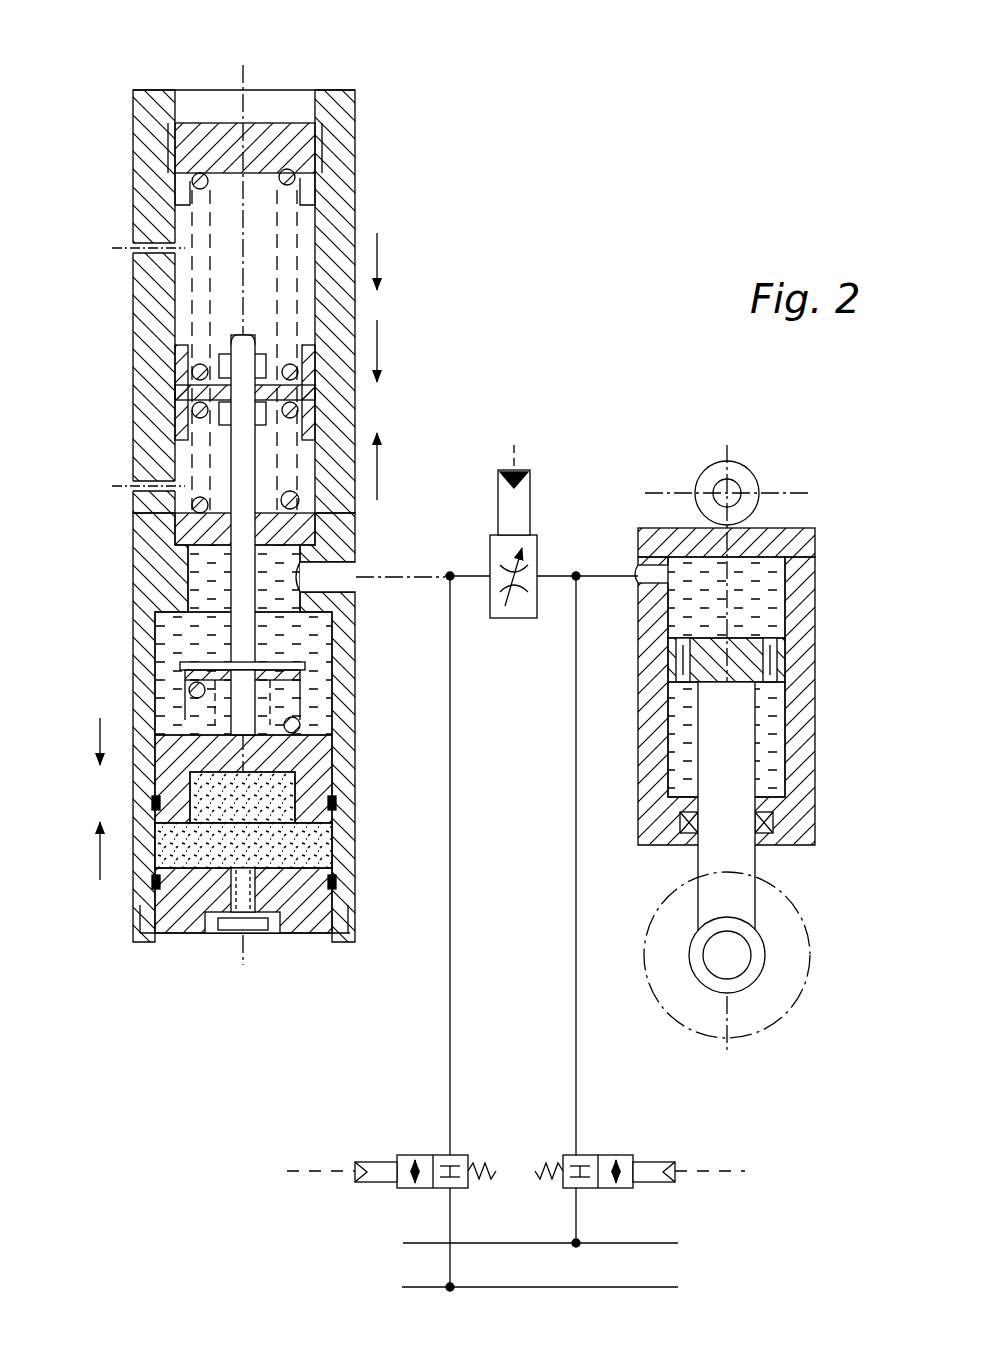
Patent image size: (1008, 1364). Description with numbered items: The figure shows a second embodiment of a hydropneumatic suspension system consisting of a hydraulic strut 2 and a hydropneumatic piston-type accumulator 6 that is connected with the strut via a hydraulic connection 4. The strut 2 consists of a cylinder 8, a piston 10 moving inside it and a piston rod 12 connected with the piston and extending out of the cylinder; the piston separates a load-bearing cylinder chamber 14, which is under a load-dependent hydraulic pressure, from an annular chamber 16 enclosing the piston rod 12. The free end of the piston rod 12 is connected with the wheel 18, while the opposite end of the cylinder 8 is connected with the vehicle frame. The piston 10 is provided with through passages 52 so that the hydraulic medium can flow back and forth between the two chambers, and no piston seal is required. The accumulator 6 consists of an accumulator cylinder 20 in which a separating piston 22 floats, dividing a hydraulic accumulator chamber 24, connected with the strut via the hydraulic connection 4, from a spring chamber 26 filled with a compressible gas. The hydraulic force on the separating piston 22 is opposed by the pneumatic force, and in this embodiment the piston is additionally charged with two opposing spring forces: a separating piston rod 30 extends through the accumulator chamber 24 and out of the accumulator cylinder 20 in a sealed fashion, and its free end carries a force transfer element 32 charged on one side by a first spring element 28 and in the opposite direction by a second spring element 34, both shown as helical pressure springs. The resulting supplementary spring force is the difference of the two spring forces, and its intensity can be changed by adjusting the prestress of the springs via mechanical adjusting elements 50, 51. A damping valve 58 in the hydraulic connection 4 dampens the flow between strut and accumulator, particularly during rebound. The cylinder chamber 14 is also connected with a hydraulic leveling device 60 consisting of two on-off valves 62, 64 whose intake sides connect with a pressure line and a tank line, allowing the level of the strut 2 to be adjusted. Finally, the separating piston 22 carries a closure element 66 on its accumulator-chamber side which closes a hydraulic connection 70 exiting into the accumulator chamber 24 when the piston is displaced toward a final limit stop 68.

The hydraulic strut 2 is at (740, 747).
The hydraulic connection 4 is at (606, 576).
The hydropneumatic piston-type accumulator 6 is at (128, 962).
The cylinder 8 is at (800, 758).
The piston 10 is at (760, 585).
The piston rod 12 is at (738, 738).
The cylinder chamber 14 is at (772, 548).
The annular chamber 16 is at (690, 770).
The wheel 18 is at (795, 988).
The accumulator cylinder 20 is at (160, 862).
The separating piston 22 is at (165, 775).
The accumulator chamber 24 is at (180, 667).
The spring chamber 26 is at (203, 865).
The first spring element 28 is at (197, 233).
The separating piston rod 30 is at (230, 568).
The force transfer element 32 is at (182, 400).
The second spring element 34 is at (190, 457).
The mechanical adjusting element 50 is at (272, 140).
The mechanical adjusting element 51 is at (220, 405).
The through passages 52 is at (683, 660).
The damping valve 58 is at (547, 520).
The hydraulic leveling device 60 is at (470, 869).
The on-off valve 62 is at (421, 1150).
The on-off valve 64 is at (603, 1150).
The closure element 66 is at (204, 662).
The final limit stop 68 is at (282, 646).
The hydraulic connection 70 is at (348, 578).